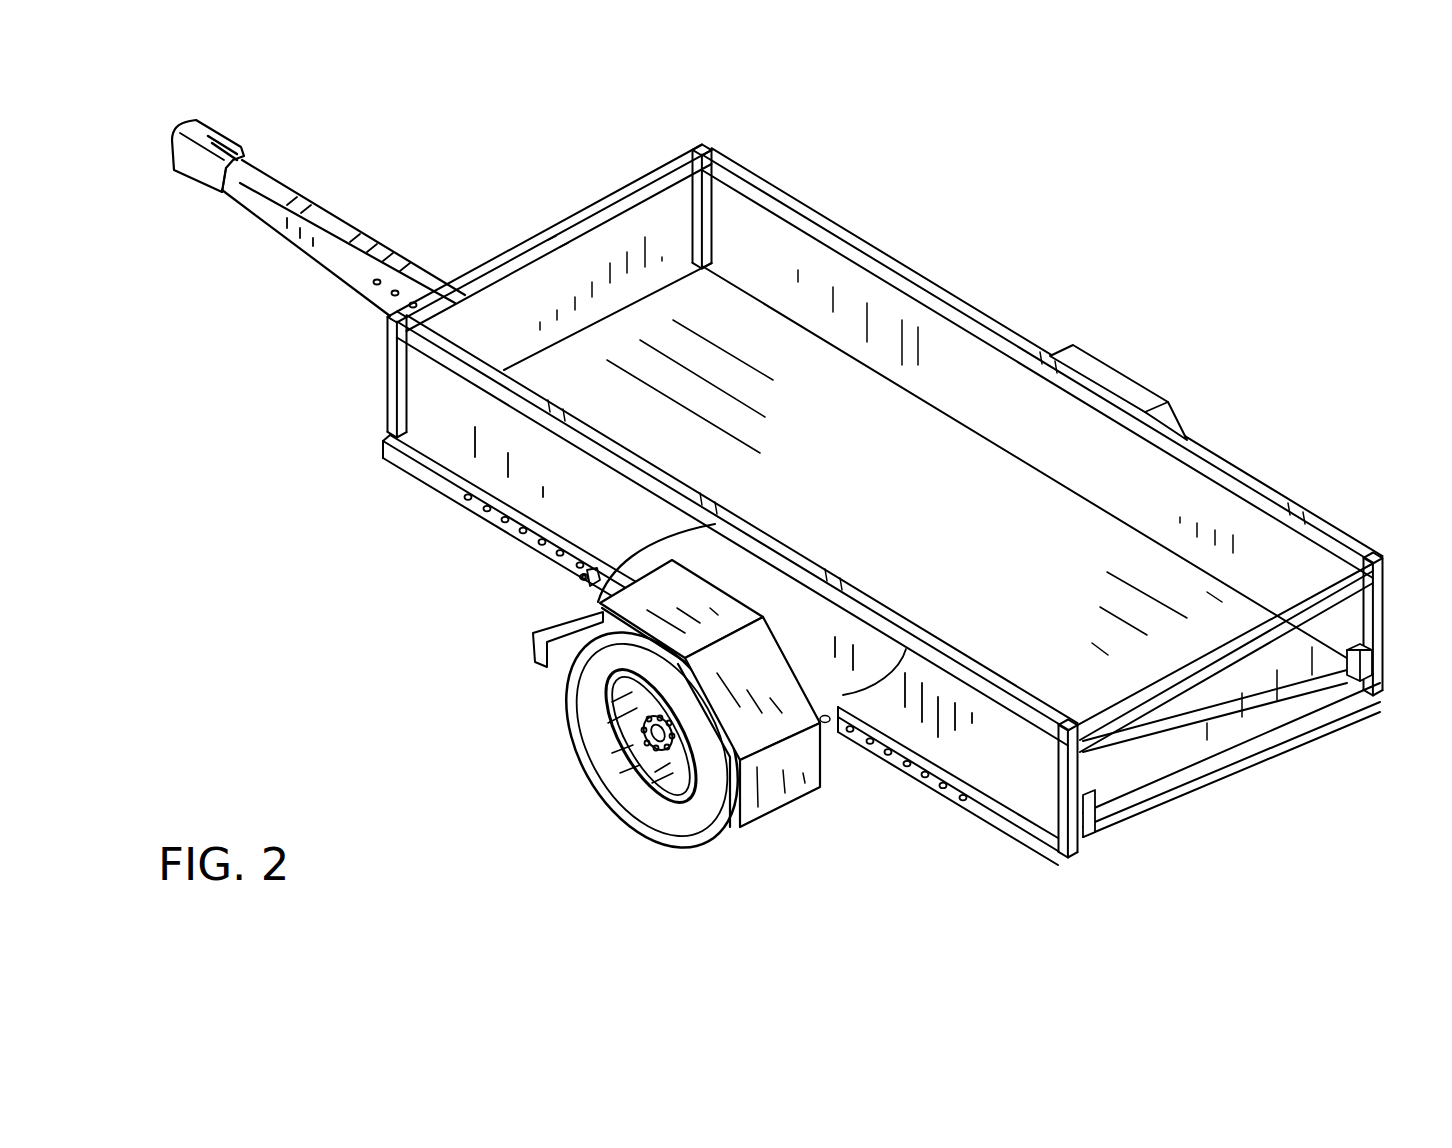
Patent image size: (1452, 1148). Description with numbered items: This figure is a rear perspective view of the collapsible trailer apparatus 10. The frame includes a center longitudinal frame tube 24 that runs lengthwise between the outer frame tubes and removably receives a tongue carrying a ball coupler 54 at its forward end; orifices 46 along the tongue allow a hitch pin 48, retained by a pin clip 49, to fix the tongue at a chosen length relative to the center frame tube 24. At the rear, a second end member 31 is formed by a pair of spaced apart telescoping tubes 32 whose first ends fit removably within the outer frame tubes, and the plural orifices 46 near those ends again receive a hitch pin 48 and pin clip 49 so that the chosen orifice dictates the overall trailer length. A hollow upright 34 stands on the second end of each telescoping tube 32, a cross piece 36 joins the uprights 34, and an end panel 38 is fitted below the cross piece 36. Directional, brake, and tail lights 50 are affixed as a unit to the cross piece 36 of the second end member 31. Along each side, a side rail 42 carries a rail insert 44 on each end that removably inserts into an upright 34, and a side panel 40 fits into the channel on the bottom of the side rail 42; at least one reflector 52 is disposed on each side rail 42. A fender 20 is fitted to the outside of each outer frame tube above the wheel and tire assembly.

The collapsible trailer apparatus 10 is at (1070, 201).
The fender 20 is at (790, 797).
The center longitudinal frame tube 24 is at (911, 620).
The second end member 31 is at (975, 832).
The telescoping tube 32 is at (467, 507).
The hollow upright 34 is at (386, 400).
The cross piece 36 is at (1230, 660).
The end panel 38 is at (567, 285).
The side panel 40 is at (947, 750).
The side rail 42 is at (1218, 467).
The rail insert 44 is at (694, 152).
The orifice 46 is at (372, 285).
The hitch pin 48 is at (560, 578).
The pin clip 49 is at (584, 577).
The directional, brake, and tail lights 50 is at (1090, 813).
The reflector 52 is at (1050, 354).
The ball coupler 54 is at (207, 125).